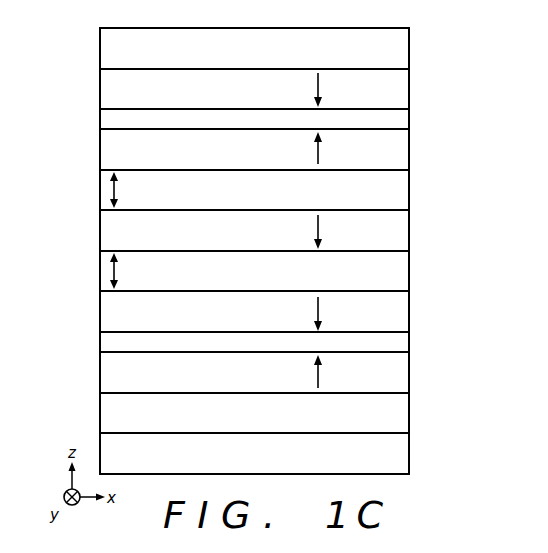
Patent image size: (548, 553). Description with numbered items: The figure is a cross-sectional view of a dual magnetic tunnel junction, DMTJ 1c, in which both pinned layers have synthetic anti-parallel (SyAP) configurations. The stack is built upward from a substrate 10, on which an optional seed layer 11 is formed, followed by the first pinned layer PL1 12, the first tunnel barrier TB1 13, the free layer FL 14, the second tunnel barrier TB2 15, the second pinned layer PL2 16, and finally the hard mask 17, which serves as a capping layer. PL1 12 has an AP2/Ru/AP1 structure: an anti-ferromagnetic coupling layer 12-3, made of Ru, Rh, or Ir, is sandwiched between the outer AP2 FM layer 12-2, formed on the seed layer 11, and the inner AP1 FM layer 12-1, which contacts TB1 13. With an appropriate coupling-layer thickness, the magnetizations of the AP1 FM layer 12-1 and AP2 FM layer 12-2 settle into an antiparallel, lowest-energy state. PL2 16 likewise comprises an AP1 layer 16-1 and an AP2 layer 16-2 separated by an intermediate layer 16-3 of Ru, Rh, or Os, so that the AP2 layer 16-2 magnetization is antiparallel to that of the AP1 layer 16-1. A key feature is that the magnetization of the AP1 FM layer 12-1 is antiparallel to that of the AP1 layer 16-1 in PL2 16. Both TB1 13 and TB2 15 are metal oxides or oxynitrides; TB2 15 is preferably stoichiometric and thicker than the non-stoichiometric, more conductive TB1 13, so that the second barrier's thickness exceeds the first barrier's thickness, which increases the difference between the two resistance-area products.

The DMTJ 1c is at (85, 30).
The substrate 10 is at (397, 456).
The seed layer 11 is at (397, 412).
The PL1 12 is at (470, 290).
The AP1 FM layer 12-1 is at (397, 314).
The anti-ferromagnetic coupling (AFC) layer 12-3 is at (397, 342).
The AP2 FM layer 12-2 is at (397, 372).
The TB1 13 is at (397, 271).
The FL 14 is at (397, 232).
The TB2 15 is at (397, 189).
The PL2 16 is at (470, 68).
The AP1 layer 16-1 is at (397, 147).
The intermediate layer 16-3 is at (397, 117).
The AP2 layer 16-2 is at (397, 89).
The hard mask 17 is at (397, 51).